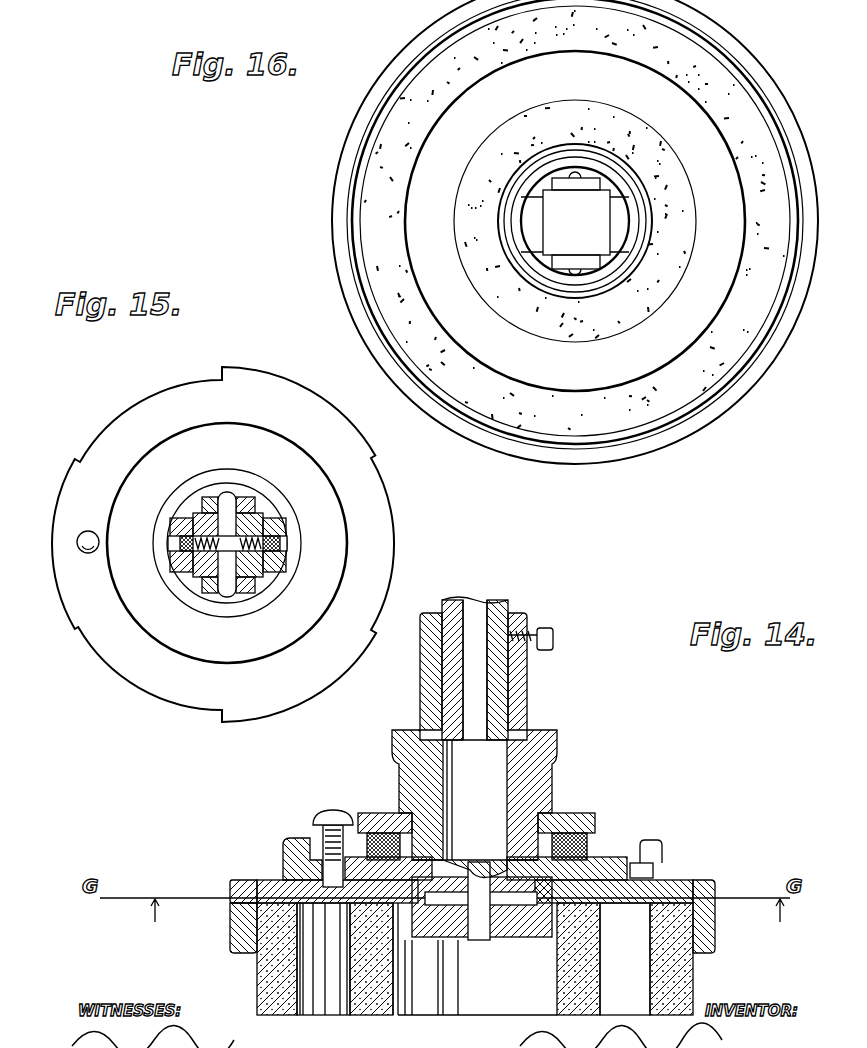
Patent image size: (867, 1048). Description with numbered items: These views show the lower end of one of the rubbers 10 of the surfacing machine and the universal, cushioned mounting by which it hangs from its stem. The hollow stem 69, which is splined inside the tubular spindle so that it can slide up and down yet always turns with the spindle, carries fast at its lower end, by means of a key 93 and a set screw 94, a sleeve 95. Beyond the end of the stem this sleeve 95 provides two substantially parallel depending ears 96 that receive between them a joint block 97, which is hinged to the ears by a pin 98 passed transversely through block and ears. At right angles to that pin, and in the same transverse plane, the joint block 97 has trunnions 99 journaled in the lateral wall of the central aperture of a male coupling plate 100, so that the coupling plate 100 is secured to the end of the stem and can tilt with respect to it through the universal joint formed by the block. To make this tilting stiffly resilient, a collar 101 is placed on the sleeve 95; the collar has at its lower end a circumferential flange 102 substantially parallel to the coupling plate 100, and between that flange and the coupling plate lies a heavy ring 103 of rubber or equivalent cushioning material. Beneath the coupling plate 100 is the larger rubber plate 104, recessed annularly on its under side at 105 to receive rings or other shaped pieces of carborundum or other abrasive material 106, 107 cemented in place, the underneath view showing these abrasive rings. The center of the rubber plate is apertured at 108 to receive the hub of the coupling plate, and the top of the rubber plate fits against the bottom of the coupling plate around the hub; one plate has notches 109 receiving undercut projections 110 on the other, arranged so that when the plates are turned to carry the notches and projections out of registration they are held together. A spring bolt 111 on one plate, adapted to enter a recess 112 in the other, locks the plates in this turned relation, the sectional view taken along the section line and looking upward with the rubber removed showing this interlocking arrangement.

In FIG. 16, the rubber 10 is at (744, 389).
In FIG. 14, the rubber 10 is at (470, 1005).
In FIG. 14, the stem 69 is at (500, 598).
In FIG. 14, the key 93 is at (443, 607).
In FIG. 14, the set screw 94 is at (553, 637).
In FIG. 14, the sleeve 95 is at (524, 732).
In FIG. 16, the depending ears 96 is at (598, 182).
In FIG. 15, the depending ears 96 is at (246, 498).
In FIG. 14, the depending ears 96 is at (478, 858).
In FIG. 16, the joint block 97 is at (576, 222).
In FIG. 15, the joint block 97 is at (203, 580).
In FIG. 14, the joint block 97 is at (452, 937).
In FIG. 16, the pin 98 is at (576, 176).
In FIG. 15, the pin 98 is at (228, 492).
In FIG. 14, the pin 98 is at (488, 937).
In FIG. 15, the trunnions 99 is at (170, 540).
In FIG. 14, the trunnions 99 is at (534, 934).
In FIG. 15, the male coupling plate 100 is at (372, 494).
In FIG. 14, the male coupling plate 100 is at (650, 860).
In FIG. 14, the collar 101 is at (553, 796).
In FIG. 14, the circumferential flange 102 is at (596, 817).
In FIG. 14, the cushioning ring 103 is at (588, 847).
In FIG. 14, the rubber plate 104 is at (262, 884).
In FIG. 16, the annular recess 105 is at (488, 437).
In FIG. 14, the annular recess 105 is at (238, 920).
In FIG. 16, the abrasive ring 106 is at (640, 424).
In FIG. 14, the abrasive ring 106 is at (254, 978).
In FIG. 16, the abrasive ring 107 is at (533, 331).
In FIG. 14, the abrasive ring 107 is at (367, 1012).
In FIG. 16, the hub aperture 108 is at (608, 262).
In FIG. 14, the hub aperture 108 is at (465, 960).
In FIG. 15, the notches 109 is at (96, 652).
In FIG. 14, the notches 109 is at (654, 870).
In FIG. 14, the undercut projections 110 is at (649, 845).
In FIG. 14, the spring bolt 111 is at (319, 810).
In FIG. 14, the recess 112 is at (294, 858).